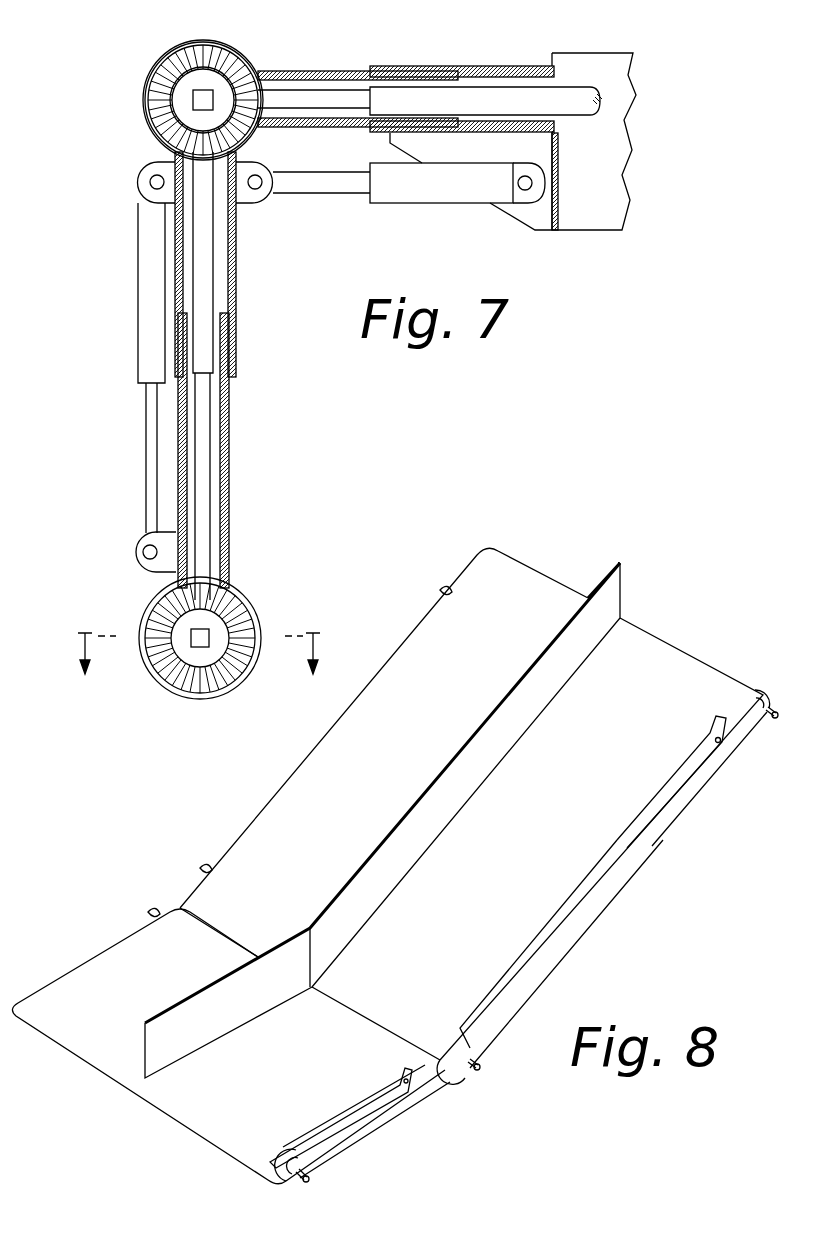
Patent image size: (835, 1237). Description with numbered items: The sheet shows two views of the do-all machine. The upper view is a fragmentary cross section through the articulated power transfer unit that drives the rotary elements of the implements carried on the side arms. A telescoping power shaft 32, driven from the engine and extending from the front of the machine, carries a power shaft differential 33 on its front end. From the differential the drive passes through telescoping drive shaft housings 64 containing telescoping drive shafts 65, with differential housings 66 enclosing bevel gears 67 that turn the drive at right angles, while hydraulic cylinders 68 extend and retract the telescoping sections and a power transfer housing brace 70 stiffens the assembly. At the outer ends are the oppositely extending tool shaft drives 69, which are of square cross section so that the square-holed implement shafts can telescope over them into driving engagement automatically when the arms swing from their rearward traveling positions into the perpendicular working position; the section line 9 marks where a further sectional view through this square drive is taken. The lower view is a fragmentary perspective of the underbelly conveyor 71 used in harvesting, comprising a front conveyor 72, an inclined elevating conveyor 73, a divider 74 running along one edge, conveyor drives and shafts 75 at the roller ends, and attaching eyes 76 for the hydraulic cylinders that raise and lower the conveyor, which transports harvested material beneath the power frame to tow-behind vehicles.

In FIG. 7, the telescoping power shaft 32 is at (572, 88).
In FIG. 7, the power shaft differential 33 is at (250, 44).
In FIG. 7, the telescoping drive shaft housings 64 is at (303, 74).
In FIG. 7, the telescoping drive shafts 65 is at (350, 92).
In FIG. 7, the differential housings 66 is at (146, 76).
In FIG. 7, the bevel gears 67 is at (150, 112).
In FIG. 7, the hydraulic cylinders 68 is at (398, 205).
In FIG. 7, the tool shaft drives 69 is at (212, 626).
In FIG. 7, the power transfer housing brace 70 is at (538, 232).
In FIG. 8, the underbelly conveyor 71 is at (634, 903).
In FIG. 8, the front conveyor 72 is at (96, 1044).
In FIG. 8, the elevating conveyor 73 is at (518, 578).
In FIG. 8, the divider 74 is at (628, 598).
In FIG. 8, the conveyor drives and shafts 75 is at (768, 720).
In FIG. 8, the attaching eyes 76 is at (445, 585).
In FIG. 7, the section line 9- 9 is at (195, 658).